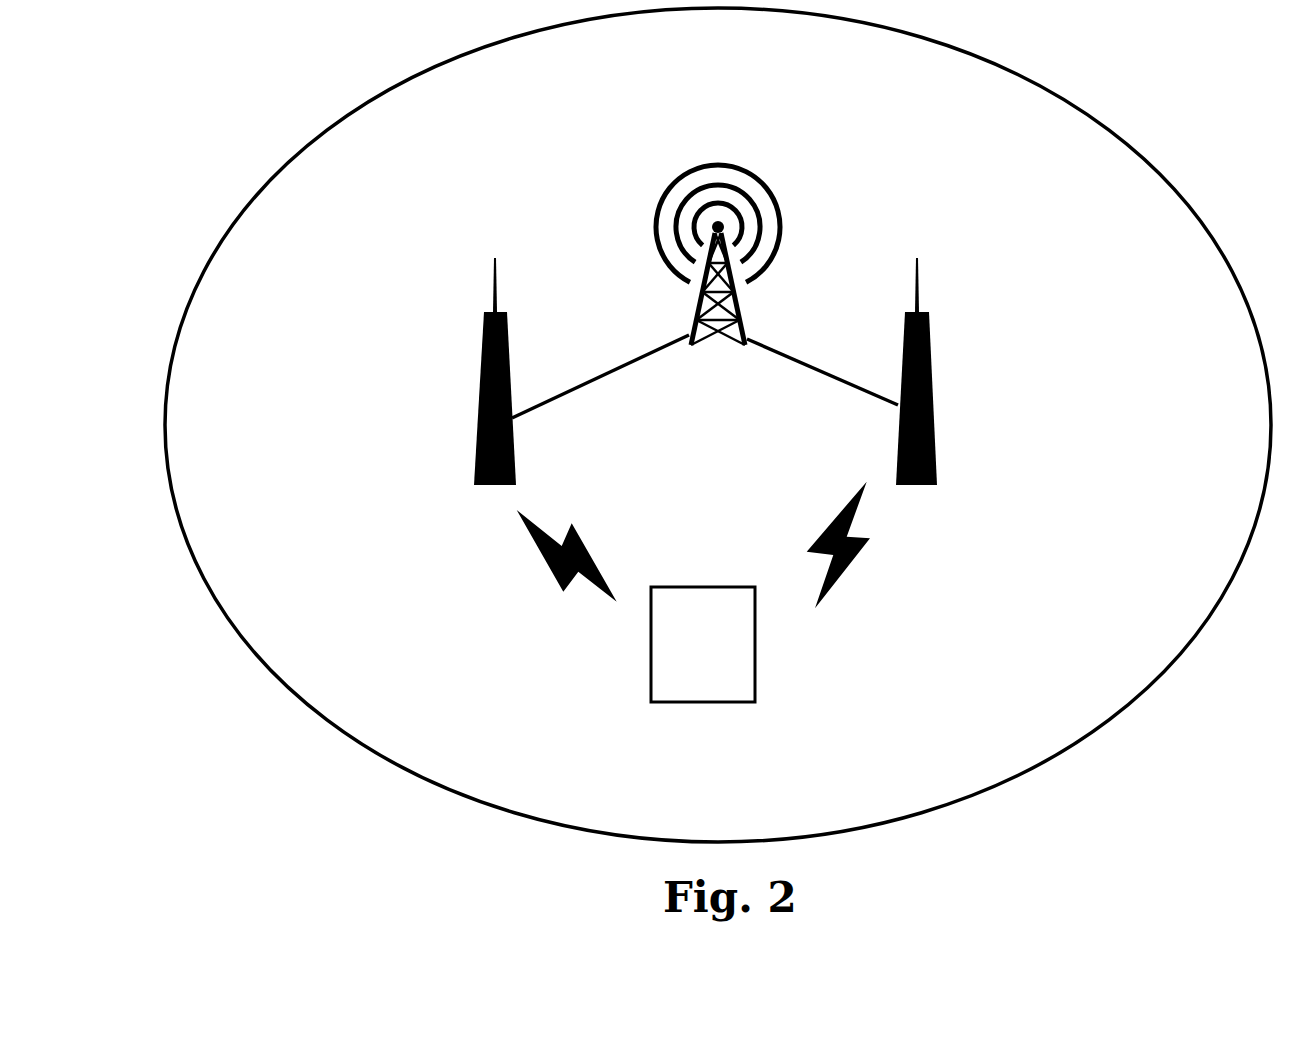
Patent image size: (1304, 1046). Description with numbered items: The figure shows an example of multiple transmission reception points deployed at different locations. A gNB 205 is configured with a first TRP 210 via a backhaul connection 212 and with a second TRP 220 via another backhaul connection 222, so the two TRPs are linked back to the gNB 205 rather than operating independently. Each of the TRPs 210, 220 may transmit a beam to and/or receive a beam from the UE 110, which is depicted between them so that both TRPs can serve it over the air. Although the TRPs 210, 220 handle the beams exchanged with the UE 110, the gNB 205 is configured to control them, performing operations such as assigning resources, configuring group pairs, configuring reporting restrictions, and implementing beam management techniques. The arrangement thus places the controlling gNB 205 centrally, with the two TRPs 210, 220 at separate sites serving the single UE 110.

The gNB 205 is at (718, 268).
The first TRP 210 is at (469, 371).
The second TRP 220 is at (944, 371).
The backhaul connection 212 is at (600, 376).
The backhaul connection 222 is at (822, 372).
The UE 110 is at (703, 644).